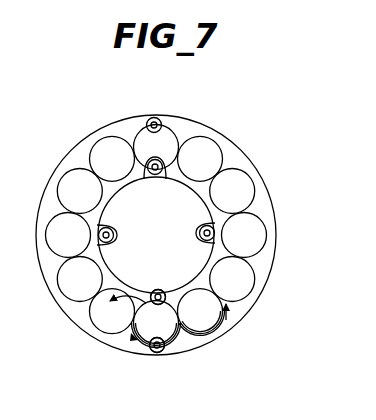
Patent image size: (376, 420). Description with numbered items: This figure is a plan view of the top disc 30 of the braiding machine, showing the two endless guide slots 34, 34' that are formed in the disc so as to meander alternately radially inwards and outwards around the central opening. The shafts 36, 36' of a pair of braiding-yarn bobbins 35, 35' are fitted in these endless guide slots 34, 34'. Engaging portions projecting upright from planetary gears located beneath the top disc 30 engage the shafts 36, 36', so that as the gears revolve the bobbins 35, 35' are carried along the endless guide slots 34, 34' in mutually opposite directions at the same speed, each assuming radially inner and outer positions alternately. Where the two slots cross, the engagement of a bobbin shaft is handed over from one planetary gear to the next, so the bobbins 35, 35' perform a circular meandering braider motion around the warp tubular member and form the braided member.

The top disc 30 is at (234, 147).
The endless guide slot 34 is at (147, 250).
The endless guide slot 34' is at (215, 318).
The braiding-yarn bobbin 35 is at (141, 372).
The shaft 36 is at (184, 372).
The braiding-yarn bobbin 35' is at (145, 262).
The shaft 36' is at (173, 278).